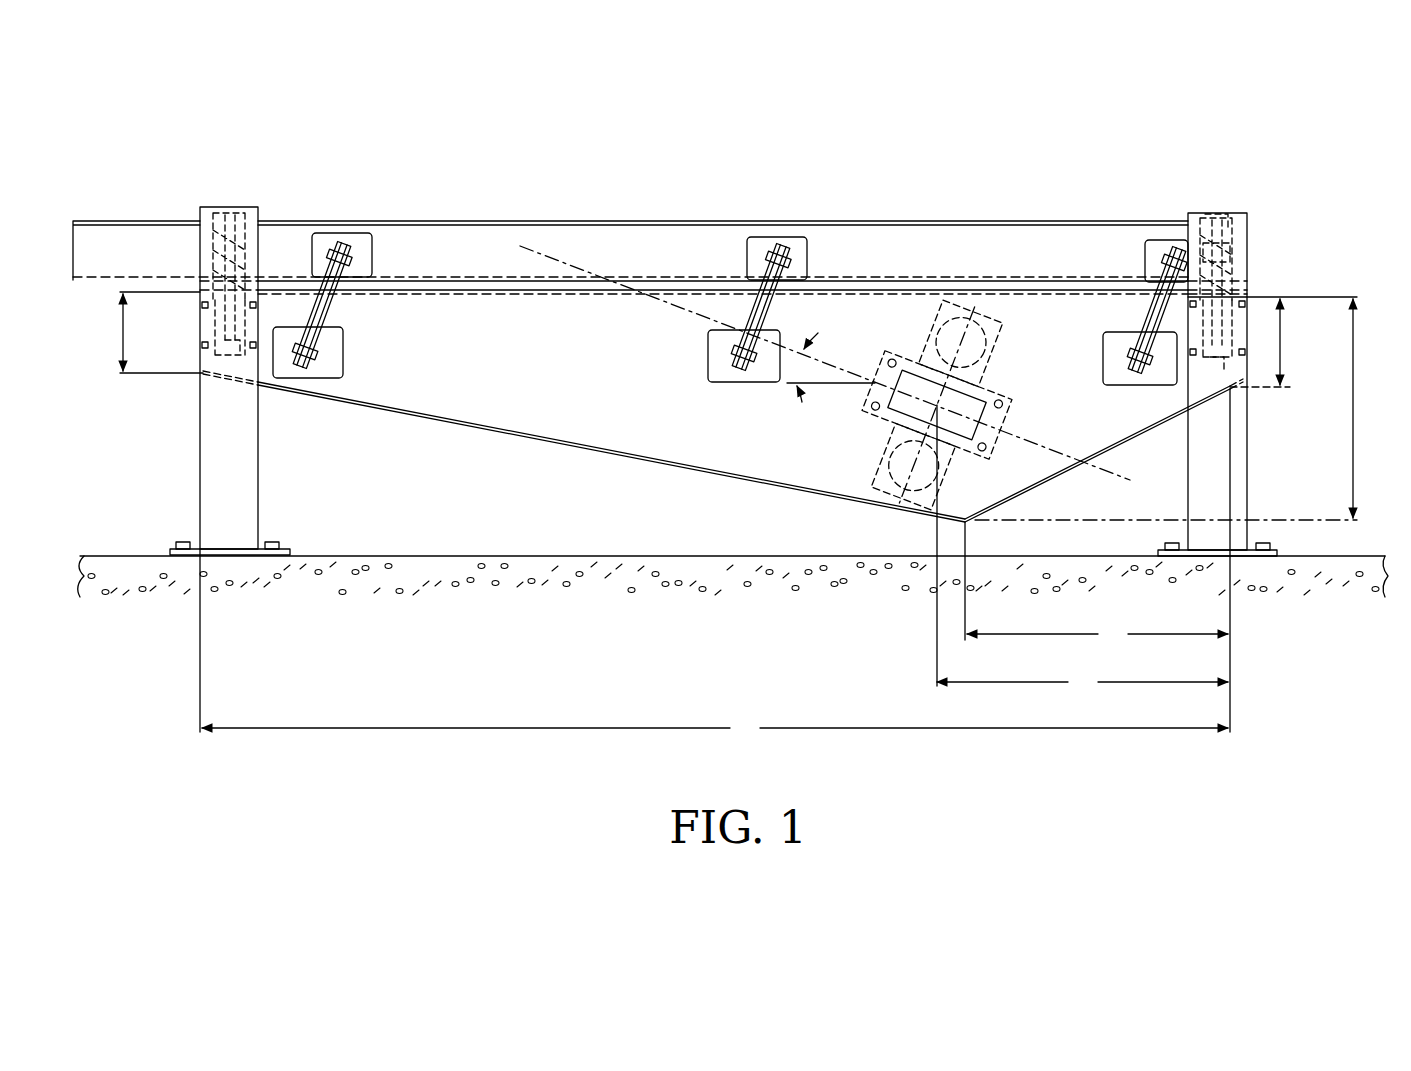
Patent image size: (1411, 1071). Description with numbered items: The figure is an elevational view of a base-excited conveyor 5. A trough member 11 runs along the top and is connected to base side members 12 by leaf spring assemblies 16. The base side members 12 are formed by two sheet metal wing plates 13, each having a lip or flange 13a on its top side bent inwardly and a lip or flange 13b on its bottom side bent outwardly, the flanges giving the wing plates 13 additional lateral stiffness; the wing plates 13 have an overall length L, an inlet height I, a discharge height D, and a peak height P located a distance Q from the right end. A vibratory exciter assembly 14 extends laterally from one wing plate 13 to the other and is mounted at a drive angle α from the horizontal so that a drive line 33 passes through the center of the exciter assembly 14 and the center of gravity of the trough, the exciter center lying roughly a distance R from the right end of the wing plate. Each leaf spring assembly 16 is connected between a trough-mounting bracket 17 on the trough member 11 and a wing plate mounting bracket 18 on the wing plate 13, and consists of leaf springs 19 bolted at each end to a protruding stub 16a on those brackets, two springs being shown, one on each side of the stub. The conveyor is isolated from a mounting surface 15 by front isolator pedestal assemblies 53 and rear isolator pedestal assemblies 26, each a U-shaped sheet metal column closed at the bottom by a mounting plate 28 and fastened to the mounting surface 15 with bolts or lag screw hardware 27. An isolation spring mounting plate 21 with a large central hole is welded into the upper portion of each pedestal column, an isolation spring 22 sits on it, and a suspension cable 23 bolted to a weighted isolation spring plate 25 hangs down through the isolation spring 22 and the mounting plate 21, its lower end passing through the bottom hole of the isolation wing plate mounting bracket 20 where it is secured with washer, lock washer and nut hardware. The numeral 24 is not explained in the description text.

The base-excited conveyor 5 is at (791, 196).
The trough member 11 is at (134, 220).
The base side members 12 is at (452, 422).
The wing plates 13 is at (636, 438).
The top flange 13a is at (455, 292).
The bottom flange 13b is at (763, 486).
The vibratory exciter assembly 14 is at (972, 330).
The mounting surface 15 is at (503, 555).
The leaf spring assemblies 16 is at (352, 241).
The protruding stub 16a is at (356, 240).
The trough-mounting brackets 17 is at (331, 233).
The wing plate mounting brackets 18 is at (345, 364).
The leaf springs 19 is at (752, 310).
The isolation wing plate mounting bracket 20 is at (205, 310).
The isolation spring mounting plate 21 is at (1240, 292).
The isolation spring 22 is at (1236, 247).
The suspension cable 23 is at (225, 338).
The pivot bracket 24 is at (1218, 362).
The weighted isolation spring plate 25 is at (1216, 213).
The rear isolator pedestal assemblies 26 is at (1248, 468).
The bolts or lag screw hardware 27 is at (1272, 547).
The mounting plate 28 is at (210, 548).
The drive line 33 is at (562, 262).
The front isolator pedestal assemblies 53 is at (200, 500).